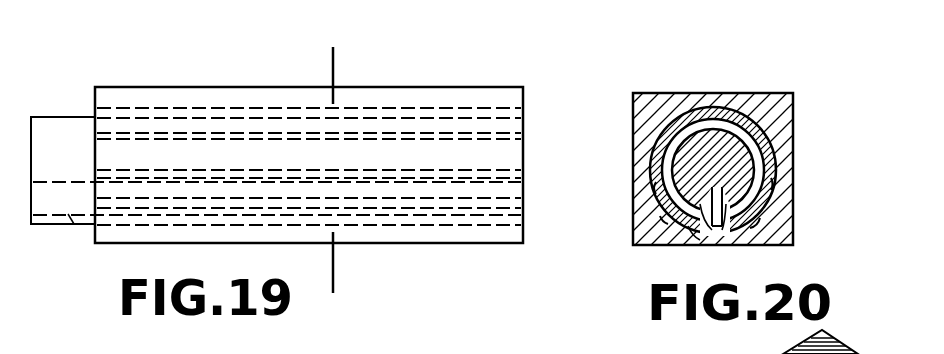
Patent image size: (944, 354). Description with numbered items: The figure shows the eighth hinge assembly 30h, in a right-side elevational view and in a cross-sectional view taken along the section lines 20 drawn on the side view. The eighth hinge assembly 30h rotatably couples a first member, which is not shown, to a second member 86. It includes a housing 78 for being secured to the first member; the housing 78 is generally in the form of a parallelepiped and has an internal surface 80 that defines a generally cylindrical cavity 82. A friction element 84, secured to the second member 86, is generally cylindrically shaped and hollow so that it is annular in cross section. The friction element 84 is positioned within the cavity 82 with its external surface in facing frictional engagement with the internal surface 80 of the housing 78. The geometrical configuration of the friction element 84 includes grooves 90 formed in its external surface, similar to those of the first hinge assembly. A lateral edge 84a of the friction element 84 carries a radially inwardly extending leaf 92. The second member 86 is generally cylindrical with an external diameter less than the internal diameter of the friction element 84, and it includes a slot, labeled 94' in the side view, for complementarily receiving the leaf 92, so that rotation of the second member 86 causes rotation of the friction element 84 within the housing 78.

In FIG. 19, the housing 78 is at (490, 238).
In FIG. 20, the housing 78 is at (736, 154).
In FIG. 19, the second member 86 is at (52, 137).
In FIG. 20, the second member 86 is at (703, 147).
In FIG. 19, the end fitting 94' is at (56, 241).
In FIG. 19, the eighth hinge assembly 30h is at (496, 78).
In FIG. 19, the section lines 20— 20 is at (325, 55).
In FIG. 20, the friction element 84 is at (768, 157).
In FIG. 20, the cavity 82 is at (652, 196).
In FIG. 20, the lateral edge 84a is at (730, 245).
In FIG. 20, the internal surface 80 is at (673, 245).
In FIG. 20, the grooves 90 is at (652, 188).
In FIG. 20, the leaf 92 is at (748, 207).